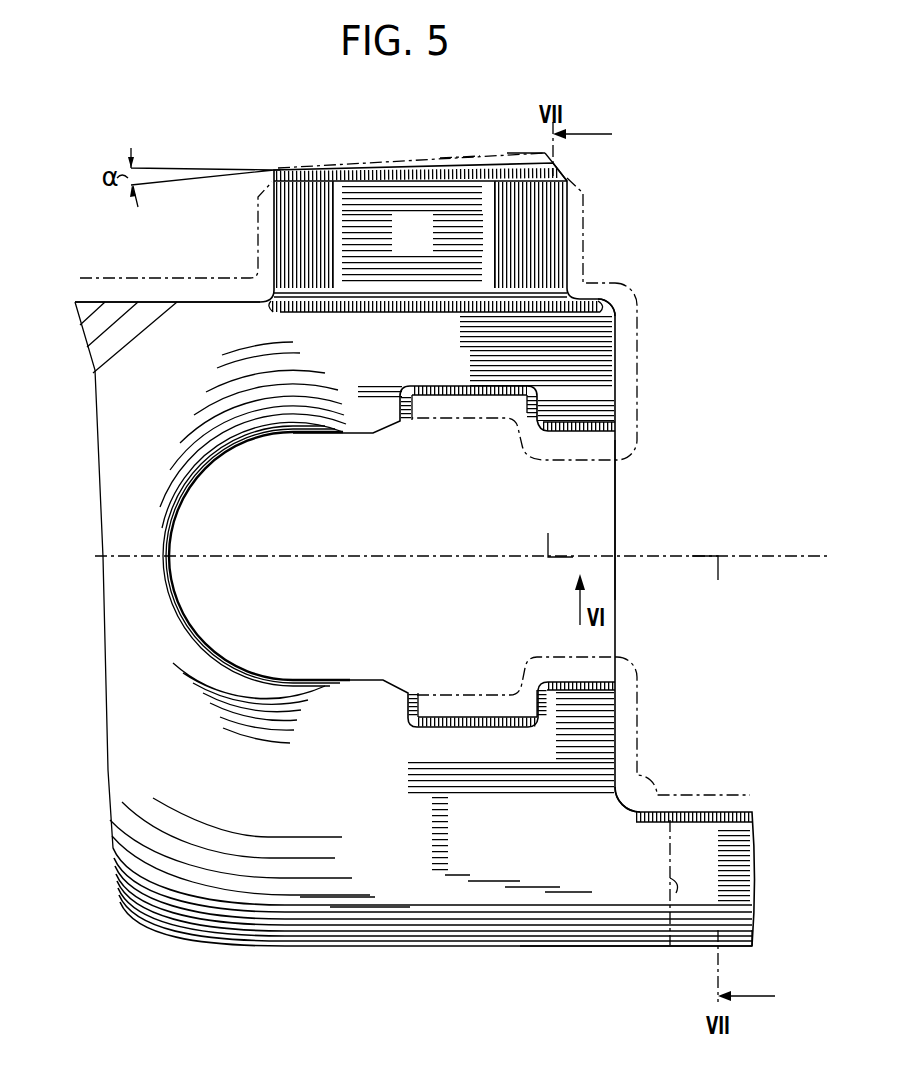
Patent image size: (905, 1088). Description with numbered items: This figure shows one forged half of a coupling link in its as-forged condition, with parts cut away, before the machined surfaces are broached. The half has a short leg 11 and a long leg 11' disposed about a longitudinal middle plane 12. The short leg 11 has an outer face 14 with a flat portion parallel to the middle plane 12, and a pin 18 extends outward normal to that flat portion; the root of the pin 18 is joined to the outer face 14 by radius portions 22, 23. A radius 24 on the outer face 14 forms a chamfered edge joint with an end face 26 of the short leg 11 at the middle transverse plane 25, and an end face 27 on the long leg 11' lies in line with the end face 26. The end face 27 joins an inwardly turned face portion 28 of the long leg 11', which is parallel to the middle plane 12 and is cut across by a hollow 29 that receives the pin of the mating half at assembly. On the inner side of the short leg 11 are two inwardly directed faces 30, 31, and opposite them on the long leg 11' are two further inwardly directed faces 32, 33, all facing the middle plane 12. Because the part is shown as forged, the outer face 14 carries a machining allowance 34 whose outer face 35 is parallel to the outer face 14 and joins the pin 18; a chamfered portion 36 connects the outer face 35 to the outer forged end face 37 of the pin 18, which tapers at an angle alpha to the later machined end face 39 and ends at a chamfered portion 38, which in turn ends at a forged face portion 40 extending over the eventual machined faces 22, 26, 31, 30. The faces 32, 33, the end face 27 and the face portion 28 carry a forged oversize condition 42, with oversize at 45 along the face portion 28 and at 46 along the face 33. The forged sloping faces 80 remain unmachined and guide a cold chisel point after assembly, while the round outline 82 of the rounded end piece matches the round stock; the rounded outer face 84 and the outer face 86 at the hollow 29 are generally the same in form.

The short leg 11 is at (415, 554).
The long leg 11' is at (443, 941).
The longitudinal middle plane 12 is at (403, 552).
The outer face 14 is at (159, 297).
The pin 18 is at (431, 246).
The radius portion 22 is at (622, 292).
The radius portion 23 is at (261, 292).
The radius 24 is at (625, 318).
The middle transverse plane 25 is at (620, 532).
The end face 26 is at (622, 368).
The end face 27 is at (621, 707).
The inwardly turned face portion 28 is at (727, 808).
The hollow 29 is at (676, 940).
The inwardly directed face 30 is at (449, 398).
The inwardly directed face 31 is at (553, 430).
The inwardly directed face 32 is at (490, 714).
The inwardly directed face 33 is at (567, 678).
The machining allowance 34 is at (115, 287).
The outer face of machining allowance 35 is at (193, 273).
The chamfered portion 36 is at (274, 168).
The outer forged end face 37 is at (472, 151).
The chamfered portion 38 is at (566, 166).
The machined end face 39 is at (501, 164).
The forged face portion 40 is at (579, 225).
The forged oversize material condition 42 is at (625, 740).
The oversize condition 45 is at (687, 805).
The oversize condition 46 is at (449, 704).
The forged sloping faces 80 is at (332, 309).
The round outline 82 is at (206, 480).
The rounded outer face 84 is at (456, 947).
The outer face 86 is at (738, 952).